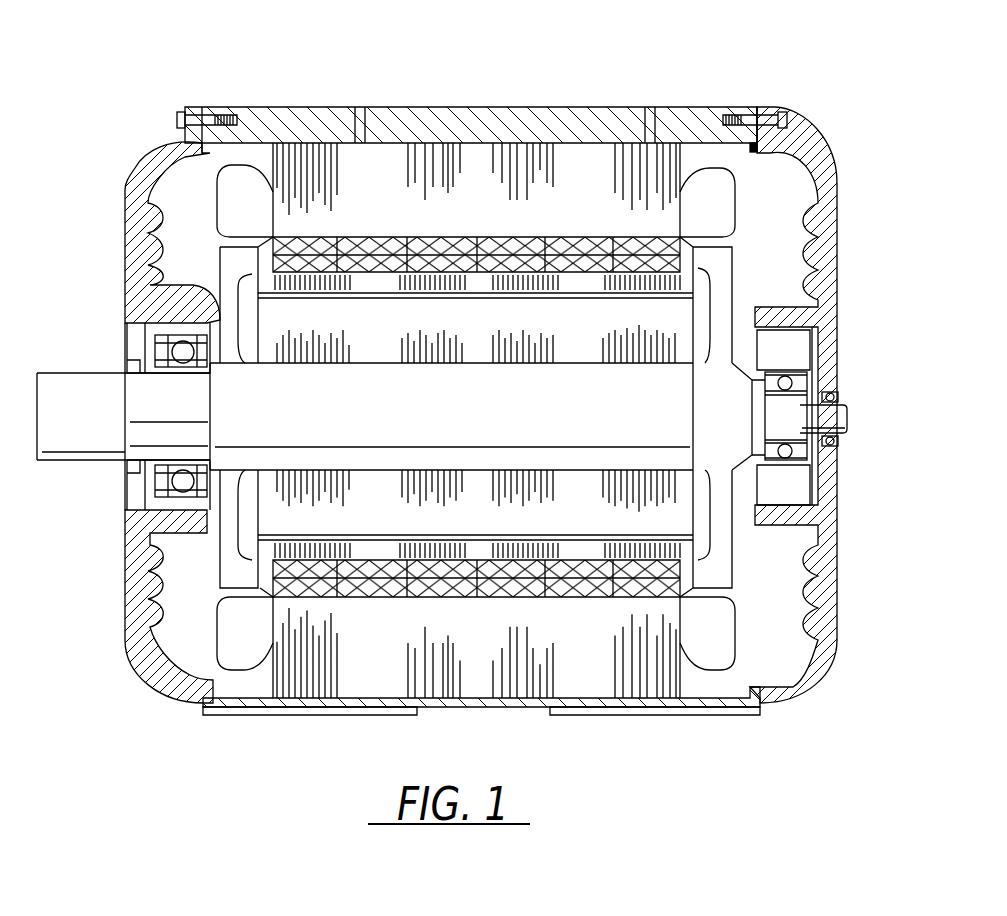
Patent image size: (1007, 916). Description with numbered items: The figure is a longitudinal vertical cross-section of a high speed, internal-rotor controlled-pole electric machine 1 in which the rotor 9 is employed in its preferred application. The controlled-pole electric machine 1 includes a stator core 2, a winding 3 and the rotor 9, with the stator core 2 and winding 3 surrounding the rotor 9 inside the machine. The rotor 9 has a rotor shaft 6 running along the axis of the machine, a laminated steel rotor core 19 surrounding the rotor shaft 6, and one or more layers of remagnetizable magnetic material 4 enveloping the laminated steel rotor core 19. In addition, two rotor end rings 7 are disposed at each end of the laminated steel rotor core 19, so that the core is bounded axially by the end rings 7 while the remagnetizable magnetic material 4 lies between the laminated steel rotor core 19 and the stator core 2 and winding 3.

The controlled-pole electric machine 1 is at (225, 98).
The stator core 2 is at (571, 162).
The winding 3 is at (721, 184).
The remagnetizable magnetic material 4 is at (677, 237).
The rotor shaft 6 is at (674, 388).
The rotor end rings 7 is at (259, 247).
The rotor 9 is at (220, 268).
The laminated steel rotor core 19 is at (803, 233).